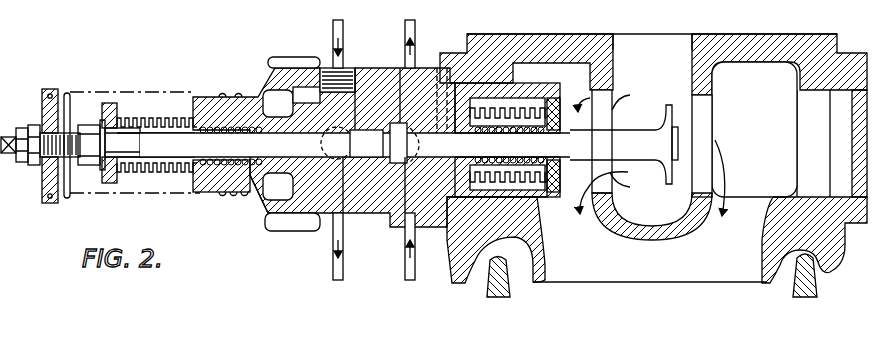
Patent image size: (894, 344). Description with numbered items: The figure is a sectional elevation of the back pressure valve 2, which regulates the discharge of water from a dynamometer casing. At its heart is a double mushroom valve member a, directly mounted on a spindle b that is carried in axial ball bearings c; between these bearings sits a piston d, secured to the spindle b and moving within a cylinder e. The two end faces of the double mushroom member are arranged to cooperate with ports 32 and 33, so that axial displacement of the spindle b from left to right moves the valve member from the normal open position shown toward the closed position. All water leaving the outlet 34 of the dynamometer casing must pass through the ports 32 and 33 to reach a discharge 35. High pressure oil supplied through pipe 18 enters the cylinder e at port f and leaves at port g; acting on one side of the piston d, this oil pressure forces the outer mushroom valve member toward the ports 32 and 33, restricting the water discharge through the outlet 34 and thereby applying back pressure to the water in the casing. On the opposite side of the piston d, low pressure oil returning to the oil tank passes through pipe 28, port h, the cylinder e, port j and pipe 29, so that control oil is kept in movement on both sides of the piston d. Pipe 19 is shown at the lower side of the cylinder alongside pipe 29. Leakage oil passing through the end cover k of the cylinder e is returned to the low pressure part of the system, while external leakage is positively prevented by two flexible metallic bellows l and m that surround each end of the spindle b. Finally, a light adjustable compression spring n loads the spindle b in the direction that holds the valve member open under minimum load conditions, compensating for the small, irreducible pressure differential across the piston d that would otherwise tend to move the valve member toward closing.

The back pressure valve 2 is at (766, 32).
The pipe 18 is at (333, 36).
The lower connecting rod 19 is at (334, 243).
The pipe 28 is at (405, 33).
The pipe 29 is at (407, 246).
The port 32 is at (580, 194).
The port 33 is at (707, 117).
The outlet 34 is at (672, 44).
The discharge 35 is at (735, 265).
The double mushroom valve member a is at (614, 150).
The spindle b is at (291, 143).
The axial ball bearings c is at (206, 188).
The piston d is at (338, 130).
The cylinder e is at (399, 92).
The port f is at (340, 70).
The port g is at (346, 215).
The port h is at (404, 70).
The port j is at (399, 213).
The end cover k is at (258, 193).
The flexible metallic bellows l is at (136, 170).
The flexible metallic bellows m is at (521, 105).
The light adjustable compression spring n is at (222, 94).